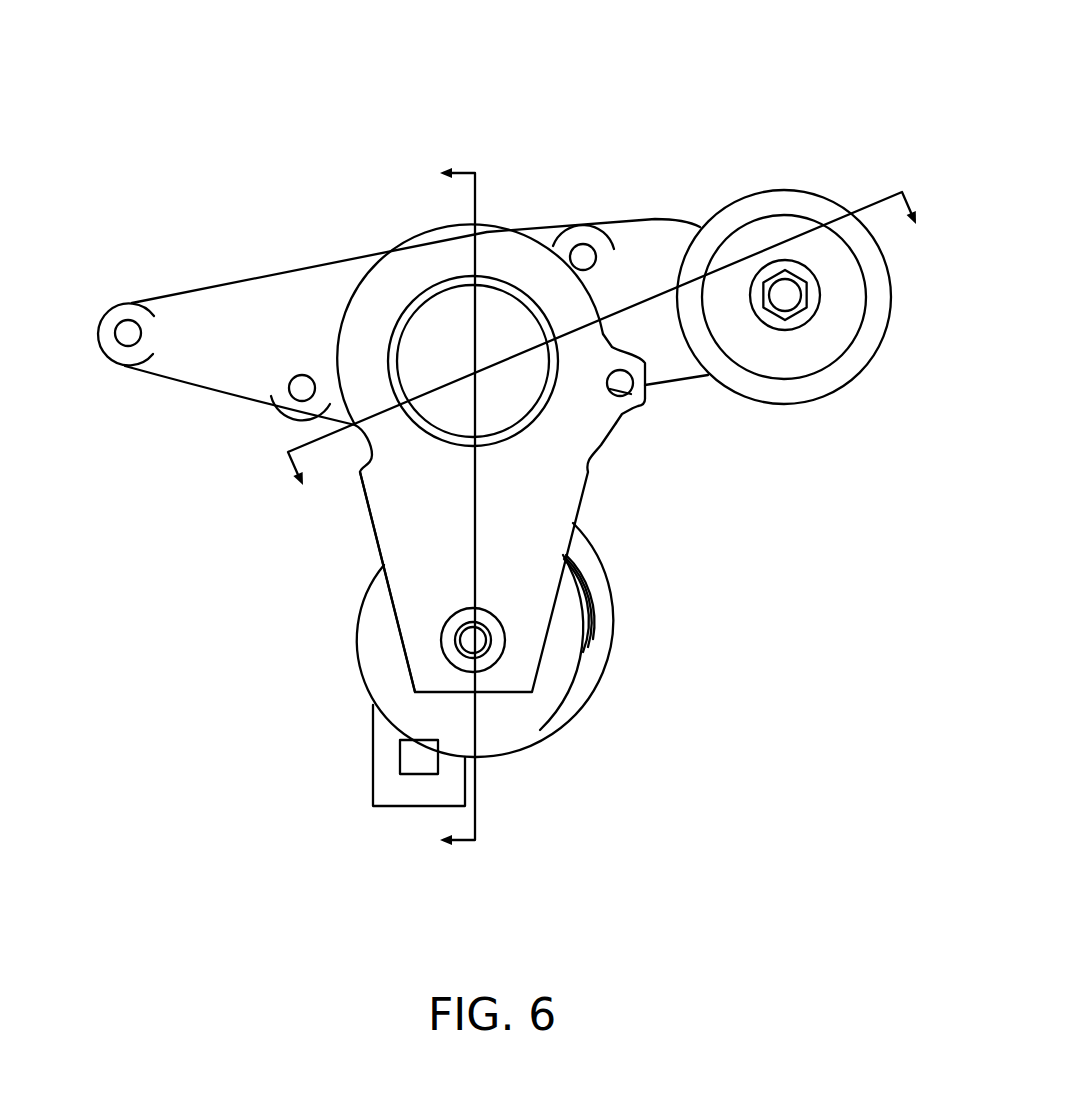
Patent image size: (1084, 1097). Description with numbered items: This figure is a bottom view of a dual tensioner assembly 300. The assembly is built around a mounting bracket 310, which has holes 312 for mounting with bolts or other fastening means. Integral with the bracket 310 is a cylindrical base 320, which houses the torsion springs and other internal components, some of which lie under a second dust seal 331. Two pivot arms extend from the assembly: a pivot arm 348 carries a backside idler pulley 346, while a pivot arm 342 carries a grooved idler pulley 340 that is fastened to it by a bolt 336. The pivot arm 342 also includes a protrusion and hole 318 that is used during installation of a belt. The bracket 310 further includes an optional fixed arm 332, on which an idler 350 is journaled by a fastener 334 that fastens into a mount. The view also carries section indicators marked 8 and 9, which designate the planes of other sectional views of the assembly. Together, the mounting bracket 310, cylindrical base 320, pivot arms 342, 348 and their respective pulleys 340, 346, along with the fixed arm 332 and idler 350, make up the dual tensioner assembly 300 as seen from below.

The dual tensioner assembly 300 is at (679, 108).
The mounting bracket 310 is at (286, 294).
The holes 312 is at (132, 335).
The cylindrical base 320 is at (363, 287).
The fixed arm 332 is at (675, 235).
The protrusion and hole 318 is at (631, 404).
The second dust seal 331 is at (517, 405).
The pivot arm 342 is at (402, 530).
The fastener 334 is at (790, 295).
The idler 350 is at (803, 403).
The bolt 336 is at (463, 640).
The grooved idler pulley 340 is at (532, 740).
The backside idler pulley 346 is at (610, 580).
The pivot arm 348 is at (382, 787).
The section line 8- 8 is at (446, 509).
The section line 9- 9 is at (610, 355).